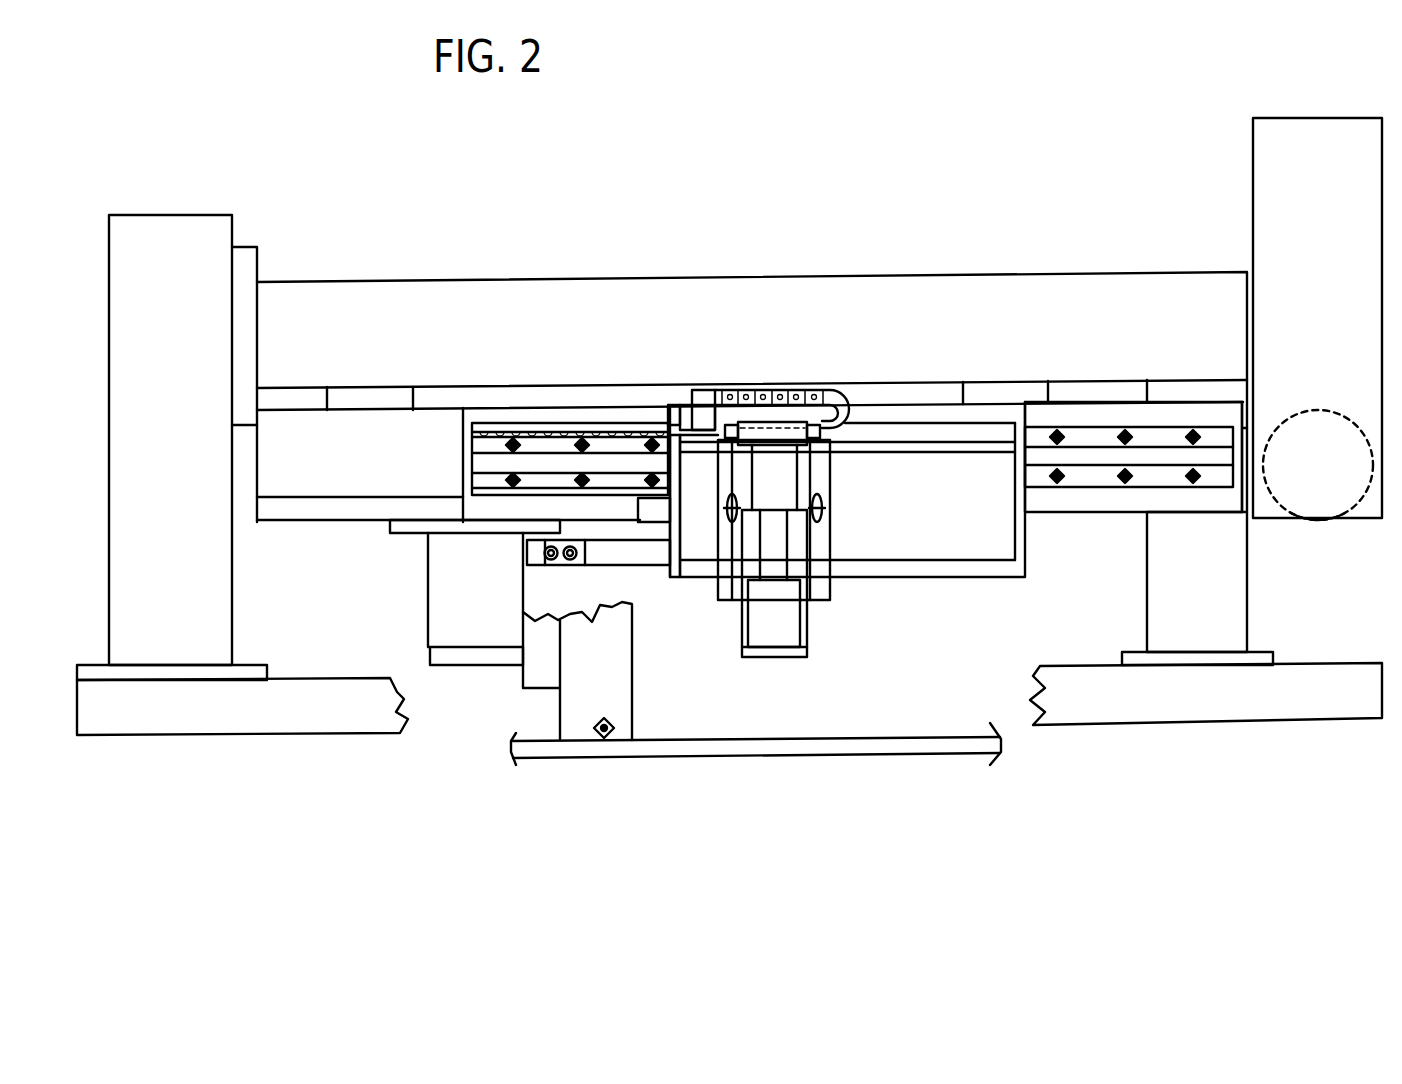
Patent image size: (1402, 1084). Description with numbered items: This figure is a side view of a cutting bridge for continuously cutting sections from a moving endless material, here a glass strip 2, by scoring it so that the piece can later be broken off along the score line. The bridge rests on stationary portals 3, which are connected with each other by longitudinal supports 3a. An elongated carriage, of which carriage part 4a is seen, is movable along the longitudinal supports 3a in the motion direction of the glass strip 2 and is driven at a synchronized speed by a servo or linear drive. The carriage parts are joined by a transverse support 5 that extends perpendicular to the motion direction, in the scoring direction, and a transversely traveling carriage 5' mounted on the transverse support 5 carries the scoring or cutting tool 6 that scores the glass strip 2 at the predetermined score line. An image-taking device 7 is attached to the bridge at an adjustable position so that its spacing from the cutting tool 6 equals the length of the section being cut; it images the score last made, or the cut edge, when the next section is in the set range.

The glass strip 2 is at (880, 745).
The stationary portals 3 is at (190, 257).
The longitudinal supports 3a is at (740, 318).
The carriage part 4a is at (915, 488).
The transverse support 5 is at (530, 693).
The transversely traveling carriage 5' is at (577, 671).
The scoring or cutting tool 6 is at (604, 740).
The image-taking device 7 is at (773, 628).